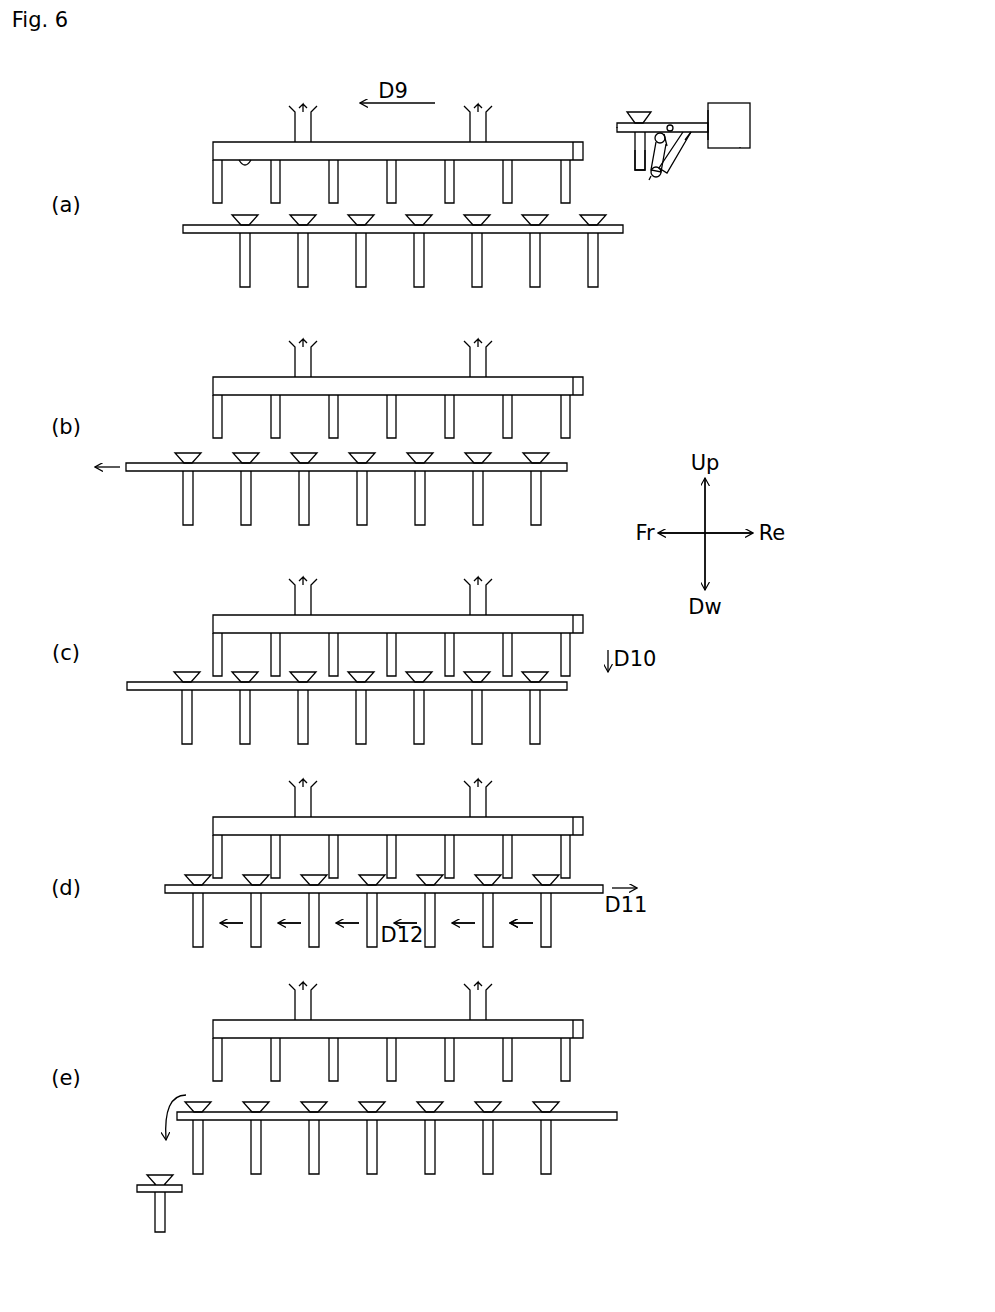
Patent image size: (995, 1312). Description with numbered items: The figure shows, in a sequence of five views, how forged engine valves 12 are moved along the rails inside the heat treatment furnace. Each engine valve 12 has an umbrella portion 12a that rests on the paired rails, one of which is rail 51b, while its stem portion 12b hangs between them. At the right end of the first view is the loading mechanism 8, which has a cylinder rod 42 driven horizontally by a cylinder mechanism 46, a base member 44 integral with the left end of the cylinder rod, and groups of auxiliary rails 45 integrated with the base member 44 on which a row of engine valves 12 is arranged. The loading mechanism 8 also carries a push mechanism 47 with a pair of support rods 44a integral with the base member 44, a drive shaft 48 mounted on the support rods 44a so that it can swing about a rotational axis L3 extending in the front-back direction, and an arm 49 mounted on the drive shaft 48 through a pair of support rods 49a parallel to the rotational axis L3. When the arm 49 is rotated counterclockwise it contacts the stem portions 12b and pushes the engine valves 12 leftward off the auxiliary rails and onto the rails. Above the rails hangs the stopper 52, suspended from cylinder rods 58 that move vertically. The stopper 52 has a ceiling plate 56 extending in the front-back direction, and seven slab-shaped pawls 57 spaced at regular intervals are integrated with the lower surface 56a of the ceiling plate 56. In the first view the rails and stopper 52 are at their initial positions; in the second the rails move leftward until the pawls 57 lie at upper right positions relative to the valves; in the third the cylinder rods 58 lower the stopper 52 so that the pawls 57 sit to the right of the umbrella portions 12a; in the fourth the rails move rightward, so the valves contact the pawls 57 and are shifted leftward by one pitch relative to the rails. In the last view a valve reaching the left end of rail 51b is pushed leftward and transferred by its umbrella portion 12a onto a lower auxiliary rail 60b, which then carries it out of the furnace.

The loading mechanism 8 is at (742, 152).
The engine valve 12 is at (245, 288).
The umbrella portion 12a is at (636, 113).
The stem portion 12b is at (634, 156).
The cylinder rod 42 is at (706, 124).
The base member 44 is at (690, 136).
The support rod 44a is at (680, 146).
The group of auxiliary rails 45 is at (600, 158).
The cylinder mechanism 46 is at (741, 118).
The push mechanism 47 is at (672, 126).
The drive shaft 48 is at (652, 178).
The arm 49 is at (660, 133).
The support rod 49a is at (661, 177).
The rail 51b is at (215, 233).
The stopper 52 is at (578, 140).
The ceiling plate 56 is at (228, 148).
The lower surface 56a is at (246, 160).
The pawl 57 is at (212, 184).
The cylinder rod 58 is at (305, 130).
The auxiliary rail 60b is at (138, 1188).
The rotational axis L3 is at (666, 150).